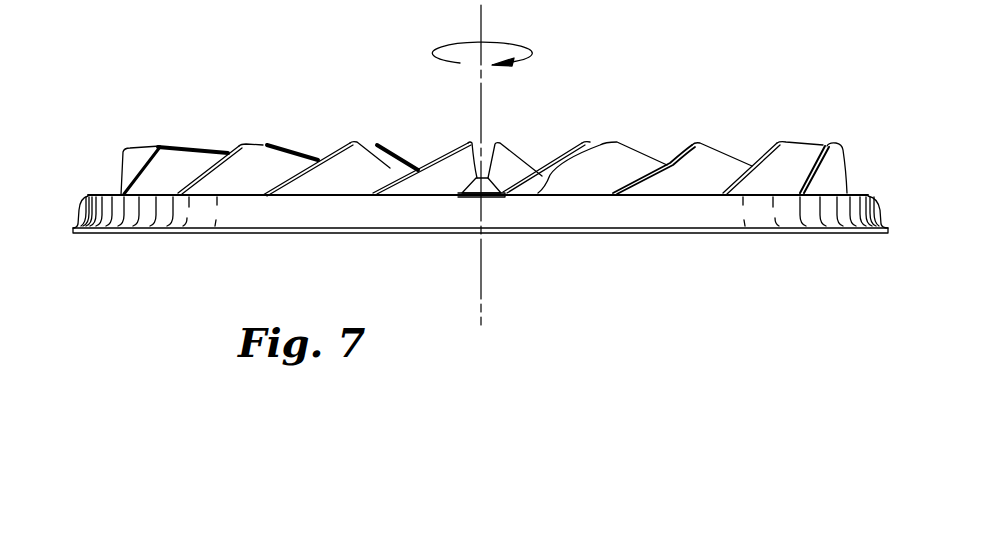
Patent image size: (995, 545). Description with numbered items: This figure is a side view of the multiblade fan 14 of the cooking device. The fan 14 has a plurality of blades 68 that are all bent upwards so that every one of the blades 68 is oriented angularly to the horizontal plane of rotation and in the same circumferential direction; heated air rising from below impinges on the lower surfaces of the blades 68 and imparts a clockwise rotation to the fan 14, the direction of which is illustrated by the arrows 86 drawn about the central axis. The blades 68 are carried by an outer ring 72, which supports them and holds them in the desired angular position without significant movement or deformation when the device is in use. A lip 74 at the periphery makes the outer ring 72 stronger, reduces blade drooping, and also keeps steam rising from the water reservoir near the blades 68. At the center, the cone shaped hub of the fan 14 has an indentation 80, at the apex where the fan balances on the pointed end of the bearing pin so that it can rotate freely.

The fan 14 is at (475, 194).
The blades 68 is at (123, 155).
The outer ring 72 is at (105, 193).
The lip 74 is at (80, 228).
The indentation 80 is at (483, 178).
The arrows 86 is at (447, 46).